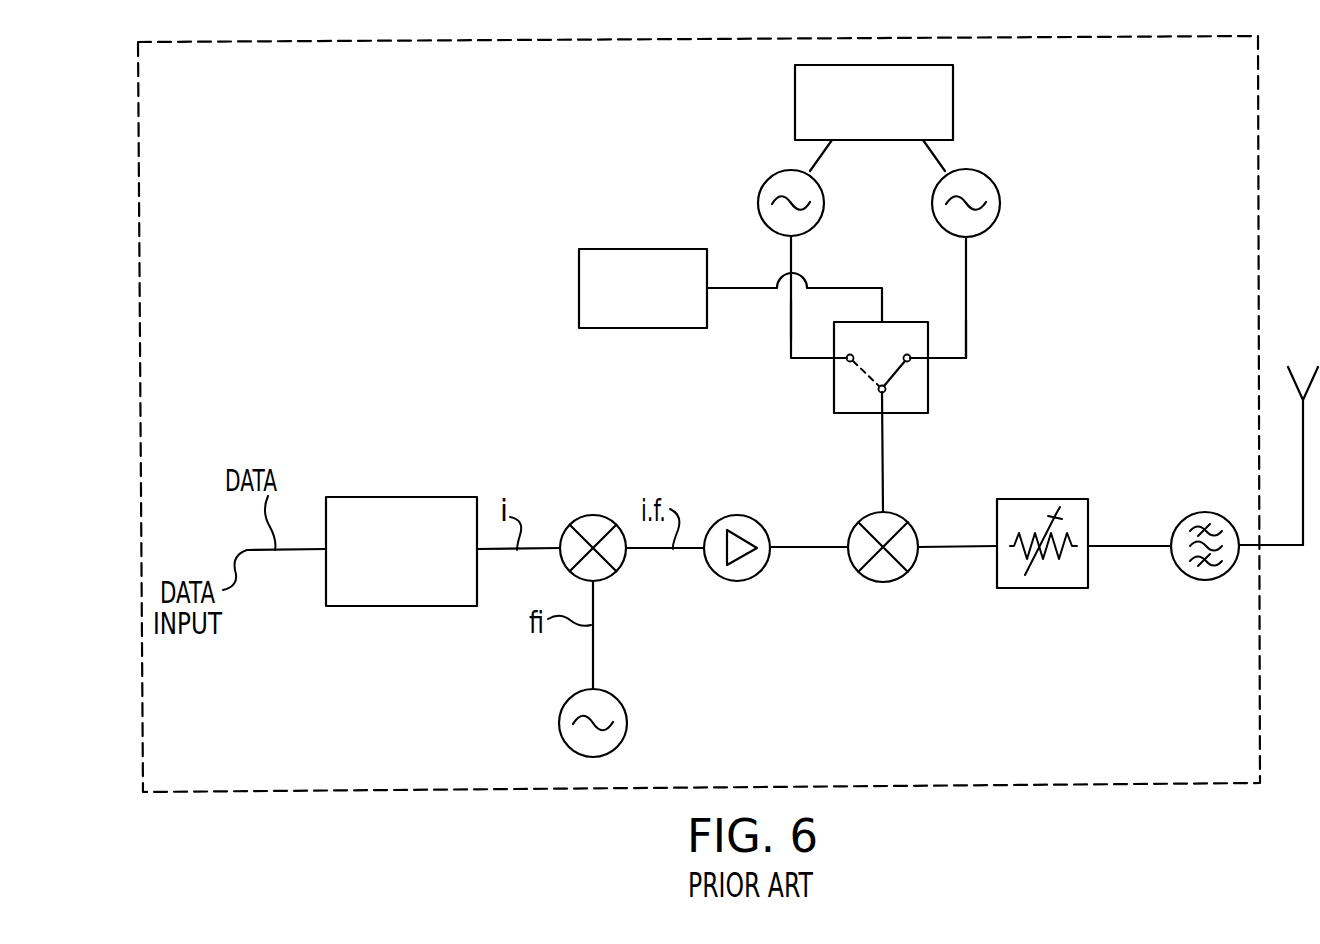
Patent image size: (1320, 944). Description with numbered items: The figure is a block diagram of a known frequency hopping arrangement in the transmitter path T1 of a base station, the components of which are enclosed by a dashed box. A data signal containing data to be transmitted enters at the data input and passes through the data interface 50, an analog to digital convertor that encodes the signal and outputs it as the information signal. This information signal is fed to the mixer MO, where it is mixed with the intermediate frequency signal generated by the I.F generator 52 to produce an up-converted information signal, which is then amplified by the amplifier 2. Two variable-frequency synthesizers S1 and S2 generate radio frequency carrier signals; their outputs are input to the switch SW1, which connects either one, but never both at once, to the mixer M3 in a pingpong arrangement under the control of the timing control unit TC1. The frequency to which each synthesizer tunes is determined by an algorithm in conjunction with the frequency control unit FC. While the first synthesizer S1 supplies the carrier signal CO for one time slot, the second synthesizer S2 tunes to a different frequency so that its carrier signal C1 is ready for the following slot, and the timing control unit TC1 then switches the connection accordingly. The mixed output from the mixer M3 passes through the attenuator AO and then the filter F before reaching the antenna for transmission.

The transmitter path T1 is at (1258, 88).
The data interface 50 is at (428, 497).
The mixer MO is at (588, 513).
The I.F generator 52 is at (620, 700).
The amplifier 2 is at (736, 581).
The mixer M3 is at (884, 581).
The attenuator AO is at (1020, 588).
The filter F is at (1210, 581).
The frequency control unit FC is at (953, 90).
The first synthesizer S1 is at (765, 190).
The second synthesizer S2 is at (996, 199).
The timing control unit TC1 is at (630, 249).
The switch SW1 is at (834, 378).
The carrier signal CO is at (791, 323).
The carrier signal C1 is at (966, 346).